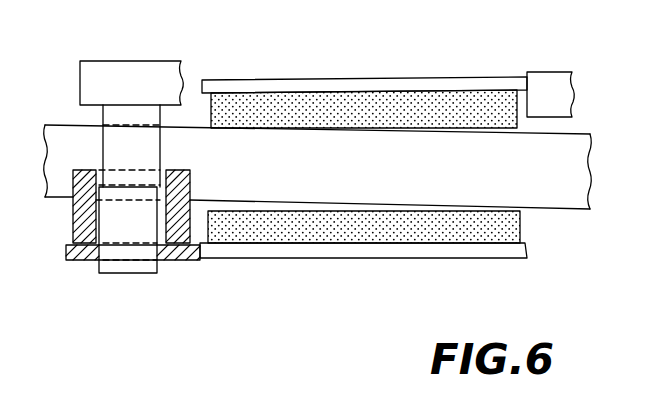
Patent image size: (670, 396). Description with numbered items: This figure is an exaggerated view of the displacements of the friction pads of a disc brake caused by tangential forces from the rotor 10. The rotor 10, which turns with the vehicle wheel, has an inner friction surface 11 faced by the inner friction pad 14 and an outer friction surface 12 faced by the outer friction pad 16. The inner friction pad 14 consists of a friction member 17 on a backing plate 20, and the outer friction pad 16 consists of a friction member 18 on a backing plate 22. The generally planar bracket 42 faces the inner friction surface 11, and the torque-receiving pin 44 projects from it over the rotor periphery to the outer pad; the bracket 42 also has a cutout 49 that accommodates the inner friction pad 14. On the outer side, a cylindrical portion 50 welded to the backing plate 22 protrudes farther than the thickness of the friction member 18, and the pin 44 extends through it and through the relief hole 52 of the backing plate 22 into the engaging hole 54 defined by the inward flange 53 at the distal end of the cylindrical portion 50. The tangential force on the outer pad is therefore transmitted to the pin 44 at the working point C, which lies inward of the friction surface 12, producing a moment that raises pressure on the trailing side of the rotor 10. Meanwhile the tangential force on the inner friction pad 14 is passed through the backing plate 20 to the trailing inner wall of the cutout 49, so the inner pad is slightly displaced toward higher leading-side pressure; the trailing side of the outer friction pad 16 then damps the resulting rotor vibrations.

The disc rotor 10 is at (342, 171).
The inner friction surface 11 is at (426, 136).
The outer friction surface 12 is at (296, 203).
The inner friction pad 14 is at (364, 69).
The outer friction pad 16 is at (363, 266).
The inner friction member 17 is at (435, 97).
The outer friction member 18 is at (443, 235).
The inner backing plate 20 is at (285, 81).
The outer backing plate 22 is at (292, 252).
The main bracket 42 is at (84, 81).
The torque-receiving pin 44 is at (124, 275).
The cutout 49 is at (523, 101).
The cylindrical portion 50 is at (118, 211).
The relief hole 52 is at (160, 255).
The inward flange 53 is at (100, 178).
The engaging hole 54 is at (164, 171).
The working point C is at (103, 178).